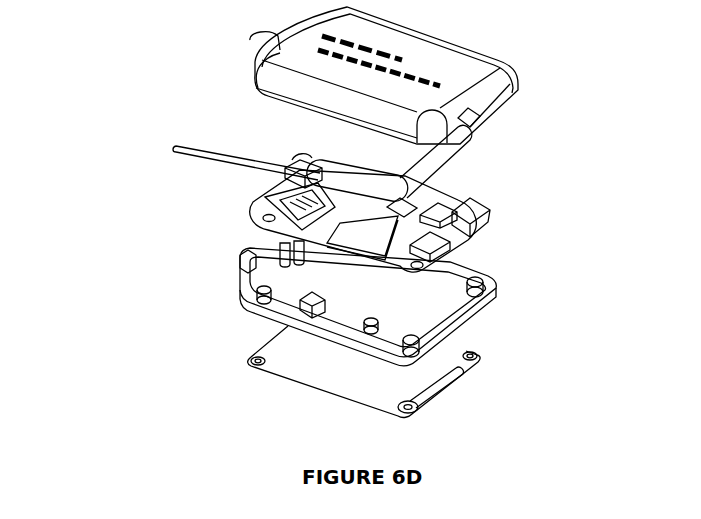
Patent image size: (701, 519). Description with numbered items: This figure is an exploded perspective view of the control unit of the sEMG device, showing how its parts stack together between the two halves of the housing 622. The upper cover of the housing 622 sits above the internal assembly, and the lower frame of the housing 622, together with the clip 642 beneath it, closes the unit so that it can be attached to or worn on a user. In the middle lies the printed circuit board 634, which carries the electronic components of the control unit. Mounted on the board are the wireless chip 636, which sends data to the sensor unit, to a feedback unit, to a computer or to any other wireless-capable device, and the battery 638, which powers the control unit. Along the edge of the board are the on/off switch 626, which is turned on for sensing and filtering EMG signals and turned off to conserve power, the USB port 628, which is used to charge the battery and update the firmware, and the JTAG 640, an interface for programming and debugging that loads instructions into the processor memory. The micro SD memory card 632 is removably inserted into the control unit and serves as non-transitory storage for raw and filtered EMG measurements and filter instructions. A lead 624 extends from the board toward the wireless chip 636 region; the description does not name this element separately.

The housing 622 is at (520, 80).
The antenna wire 624 is at (216, 167).
The on/off switch 626 is at (457, 252).
The USB port 628 is at (480, 237).
The micro SD memory card 632 is at (357, 238).
The printed circuit board 634 is at (250, 216).
The wireless chip 636 is at (268, 195).
The battery 638 is at (468, 143).
The JTAG 640 is at (485, 215).
The clip 642 is at (280, 345).